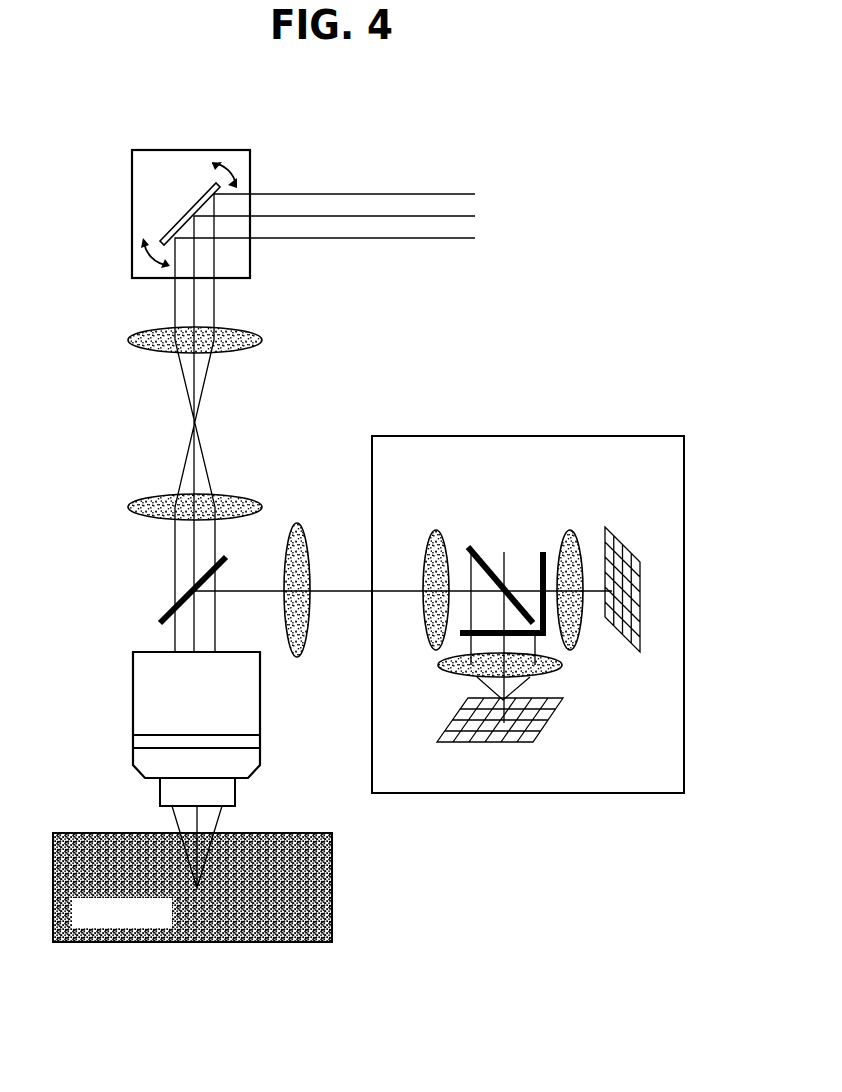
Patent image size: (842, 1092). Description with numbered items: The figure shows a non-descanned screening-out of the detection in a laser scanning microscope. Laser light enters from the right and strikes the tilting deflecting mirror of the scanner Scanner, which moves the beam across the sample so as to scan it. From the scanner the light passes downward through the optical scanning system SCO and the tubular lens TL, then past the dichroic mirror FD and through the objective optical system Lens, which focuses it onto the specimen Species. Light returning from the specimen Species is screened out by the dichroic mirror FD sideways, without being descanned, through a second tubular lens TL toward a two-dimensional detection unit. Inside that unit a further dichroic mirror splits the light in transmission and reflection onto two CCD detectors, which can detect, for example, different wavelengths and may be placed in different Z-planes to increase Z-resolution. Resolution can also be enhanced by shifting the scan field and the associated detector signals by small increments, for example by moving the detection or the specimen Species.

The scanner Scanner is at (155, 195).
The optical scanning system SCO is at (164, 338).
The tubular lens TL is at (199, 575).
The dichroic mirror FD is at (149, 590).
The optical system Lens is at (196, 770).
The specimen Species is at (192, 887).